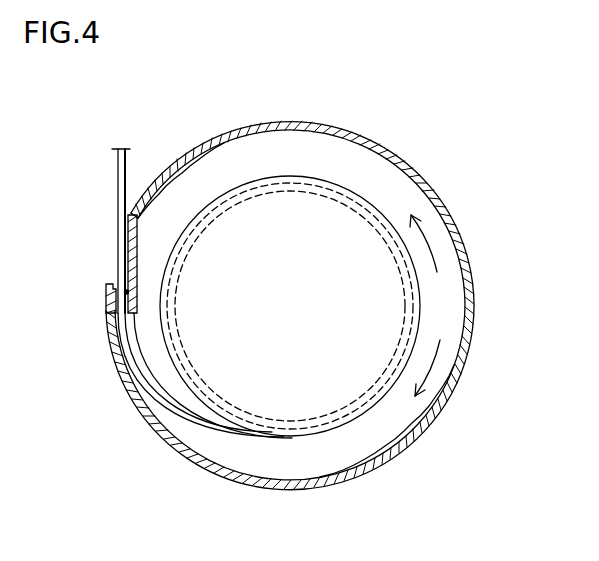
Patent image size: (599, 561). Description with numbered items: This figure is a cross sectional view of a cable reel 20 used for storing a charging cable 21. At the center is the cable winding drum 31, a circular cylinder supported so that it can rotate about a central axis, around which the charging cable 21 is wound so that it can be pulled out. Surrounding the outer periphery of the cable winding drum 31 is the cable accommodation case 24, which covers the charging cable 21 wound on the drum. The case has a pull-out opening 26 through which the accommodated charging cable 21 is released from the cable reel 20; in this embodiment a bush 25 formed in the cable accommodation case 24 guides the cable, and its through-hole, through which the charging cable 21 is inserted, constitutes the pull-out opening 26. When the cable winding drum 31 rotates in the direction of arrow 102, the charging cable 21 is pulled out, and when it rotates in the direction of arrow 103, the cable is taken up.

The cable reel 20 is at (155, 139).
The charging cable 21 is at (118, 207).
The cable accommodation case 24 is at (472, 308).
The bush 25 is at (106, 292).
The pull-out opening 26 is at (125, 290).
The cable winding drum 31 is at (388, 213).
The arrow indicating pull-out rotation direction 102 is at (437, 362).
The arrow indicating take-up rotation direction 103 is at (437, 245).